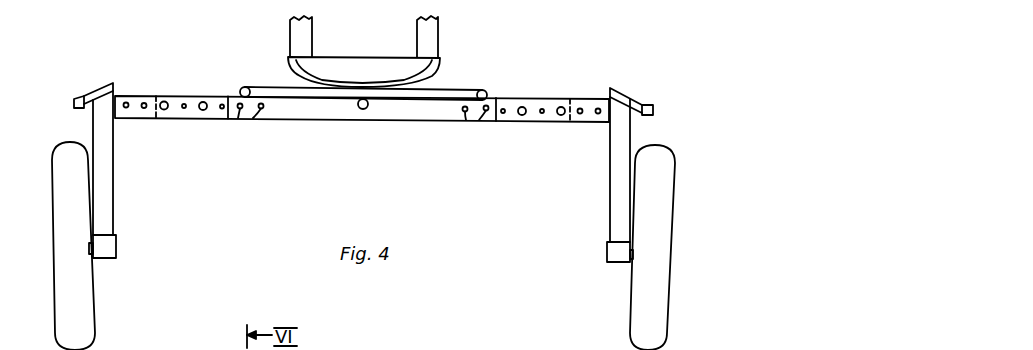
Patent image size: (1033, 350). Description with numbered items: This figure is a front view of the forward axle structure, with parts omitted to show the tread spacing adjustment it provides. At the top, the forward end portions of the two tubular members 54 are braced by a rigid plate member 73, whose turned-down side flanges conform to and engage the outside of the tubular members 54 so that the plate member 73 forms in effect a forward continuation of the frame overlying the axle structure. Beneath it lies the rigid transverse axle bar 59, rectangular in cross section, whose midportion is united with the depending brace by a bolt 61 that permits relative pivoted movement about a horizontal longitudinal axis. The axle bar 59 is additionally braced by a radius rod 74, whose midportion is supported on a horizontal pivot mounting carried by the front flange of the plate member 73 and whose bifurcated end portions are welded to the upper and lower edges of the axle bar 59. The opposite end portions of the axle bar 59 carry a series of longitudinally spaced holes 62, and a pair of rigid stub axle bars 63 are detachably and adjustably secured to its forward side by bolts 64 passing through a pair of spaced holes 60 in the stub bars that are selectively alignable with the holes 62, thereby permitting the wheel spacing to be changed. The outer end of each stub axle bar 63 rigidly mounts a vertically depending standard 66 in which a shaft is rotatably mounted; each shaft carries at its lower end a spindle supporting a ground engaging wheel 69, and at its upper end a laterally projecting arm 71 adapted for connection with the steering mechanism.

The tubular members 54 is at (290, 24).
The axle bar 59 is at (410, 119).
The holes 60 is at (145, 102).
The bolt 61 is at (358, 104).
The holes 62 is at (244, 120).
The stub axle bars 63 is at (178, 119).
The bolts 64 is at (203, 102).
The standard 66 is at (116, 205).
The ground engaging wheel 69 is at (95, 322).
The arm 71 is at (83, 95).
The plate member 73 is at (366, 63).
The radius rod 74 is at (363, 84).